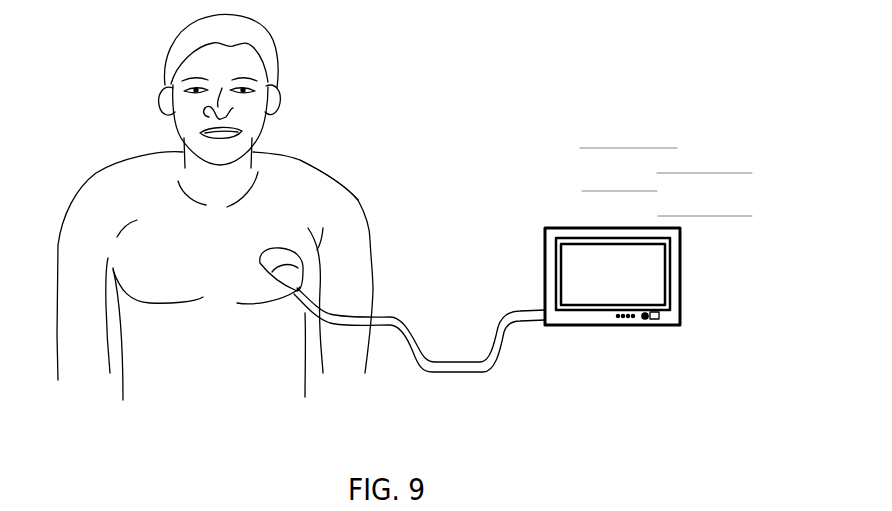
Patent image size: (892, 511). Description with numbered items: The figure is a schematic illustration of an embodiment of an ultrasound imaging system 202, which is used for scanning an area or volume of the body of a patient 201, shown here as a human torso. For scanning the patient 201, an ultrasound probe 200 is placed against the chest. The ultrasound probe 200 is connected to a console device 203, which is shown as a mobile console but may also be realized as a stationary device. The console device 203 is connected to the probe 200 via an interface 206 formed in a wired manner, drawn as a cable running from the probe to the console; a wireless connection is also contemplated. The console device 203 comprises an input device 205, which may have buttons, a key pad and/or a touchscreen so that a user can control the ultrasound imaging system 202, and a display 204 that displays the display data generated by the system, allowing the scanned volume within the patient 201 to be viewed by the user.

The ultrasound probe 200 is at (280, 250).
The patient 201 is at (315, 187).
The ultrasound imaging system 202 is at (648, 215).
The console device 203 is at (607, 236).
The display 204 is at (625, 256).
The input device 205 is at (655, 331).
The interface 206 is at (470, 373).